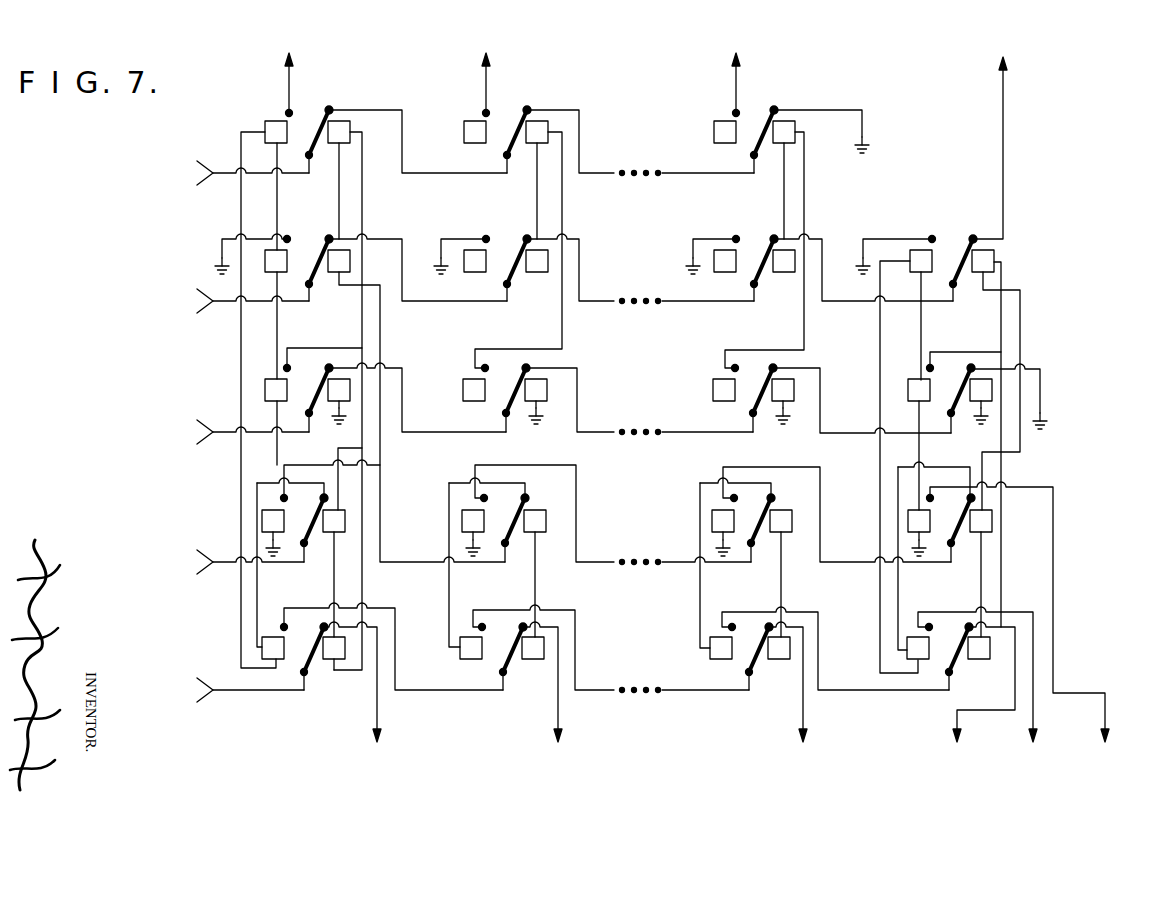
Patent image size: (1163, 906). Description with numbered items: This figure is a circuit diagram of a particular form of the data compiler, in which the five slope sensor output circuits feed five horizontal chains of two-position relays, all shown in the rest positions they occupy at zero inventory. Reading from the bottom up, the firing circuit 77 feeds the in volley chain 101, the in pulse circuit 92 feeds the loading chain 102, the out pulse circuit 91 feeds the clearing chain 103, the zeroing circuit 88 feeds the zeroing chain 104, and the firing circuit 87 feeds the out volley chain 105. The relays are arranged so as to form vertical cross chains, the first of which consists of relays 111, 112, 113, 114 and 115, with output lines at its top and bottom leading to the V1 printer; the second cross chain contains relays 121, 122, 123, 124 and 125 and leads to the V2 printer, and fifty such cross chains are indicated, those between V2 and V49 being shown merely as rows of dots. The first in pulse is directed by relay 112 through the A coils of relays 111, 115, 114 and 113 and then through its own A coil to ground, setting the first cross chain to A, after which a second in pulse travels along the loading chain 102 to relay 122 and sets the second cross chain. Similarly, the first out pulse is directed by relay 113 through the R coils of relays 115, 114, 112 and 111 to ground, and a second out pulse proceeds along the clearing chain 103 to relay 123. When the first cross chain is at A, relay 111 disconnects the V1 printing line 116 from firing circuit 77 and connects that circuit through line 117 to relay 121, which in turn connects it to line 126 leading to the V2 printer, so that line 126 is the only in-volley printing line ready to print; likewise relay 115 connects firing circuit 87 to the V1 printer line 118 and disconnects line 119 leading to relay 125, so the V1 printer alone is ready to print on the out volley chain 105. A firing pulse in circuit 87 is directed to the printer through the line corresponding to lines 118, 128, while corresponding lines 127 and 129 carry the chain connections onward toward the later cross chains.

The in volley chain 101 is at (671, 452).
The loading chain 102 is at (669, 457).
The clearing chain 103 is at (672, 509).
The zeroing chain 104 is at (659, 442).
The out volley chain 105 is at (677, 195).
The firing circuit 77 is at (222, 694).
The firing circuit 87 is at (222, 177).
The zeroing circuit 88 is at (222, 305).
The out pulse circuit 91 is at (222, 436).
The in pulse circuit 92 is at (222, 566).
The relay 111 is at (302, 641).
The relay 112 is at (308, 504).
The relay 113 is at (306, 380).
The relay 114 is at (306, 251).
The relay 115 is at (306, 122).
The V1 printing line 116 is at (379, 727).
The line 117 is at (412, 690).
The V1 printer line 118 is at (291, 83).
The line 119 is at (391, 112).
The relay 121 is at (502, 641).
The relay 122 is at (508, 504).
The relay 123 is at (505, 380).
The relay 124 is at (506, 251).
The relay 125 is at (506, 116).
The line 126 is at (560, 727).
The conductor to next in volley stage 127 is at (580, 690).
The line 128 is at (485, 86).
The conductor to next out volley stage 129 is at (569, 114).